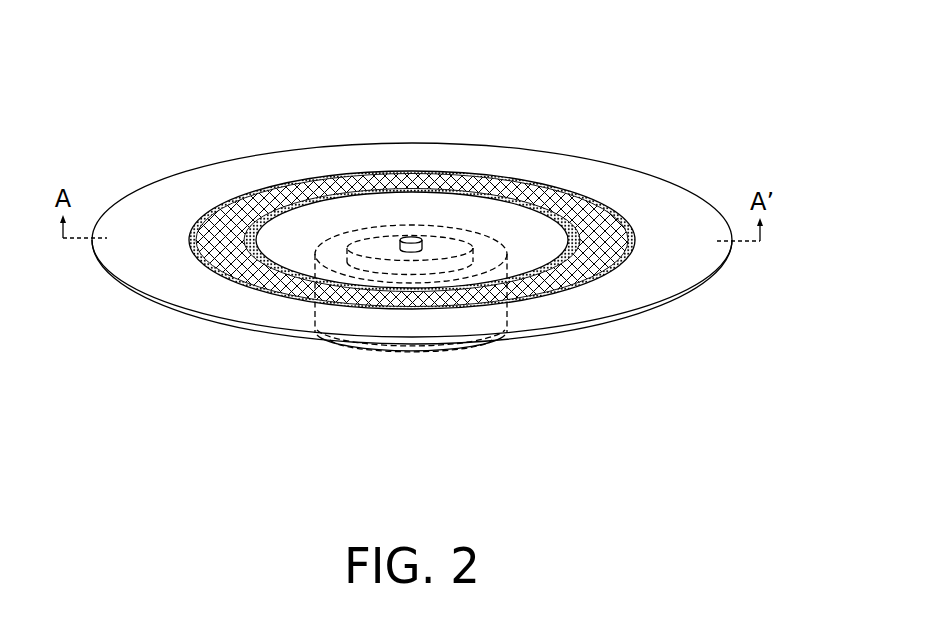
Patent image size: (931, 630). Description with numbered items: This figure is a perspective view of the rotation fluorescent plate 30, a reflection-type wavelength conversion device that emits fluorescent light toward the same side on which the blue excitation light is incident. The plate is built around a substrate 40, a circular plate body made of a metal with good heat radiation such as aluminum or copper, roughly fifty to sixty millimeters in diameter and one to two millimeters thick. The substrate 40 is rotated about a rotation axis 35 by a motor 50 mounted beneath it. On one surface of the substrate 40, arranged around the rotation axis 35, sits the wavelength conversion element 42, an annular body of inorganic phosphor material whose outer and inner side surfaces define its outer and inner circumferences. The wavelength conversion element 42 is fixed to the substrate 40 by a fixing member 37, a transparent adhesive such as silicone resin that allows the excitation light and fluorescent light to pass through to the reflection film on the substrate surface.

The rotation fluorescent plate 30 is at (412, 226).
The rotation axis 35 is at (411, 237).
The fixing member 37 is at (248, 240).
The substrate 40 is at (653, 193).
The wavelength conversion element 42 is at (273, 186).
The motor 50 is at (408, 352).